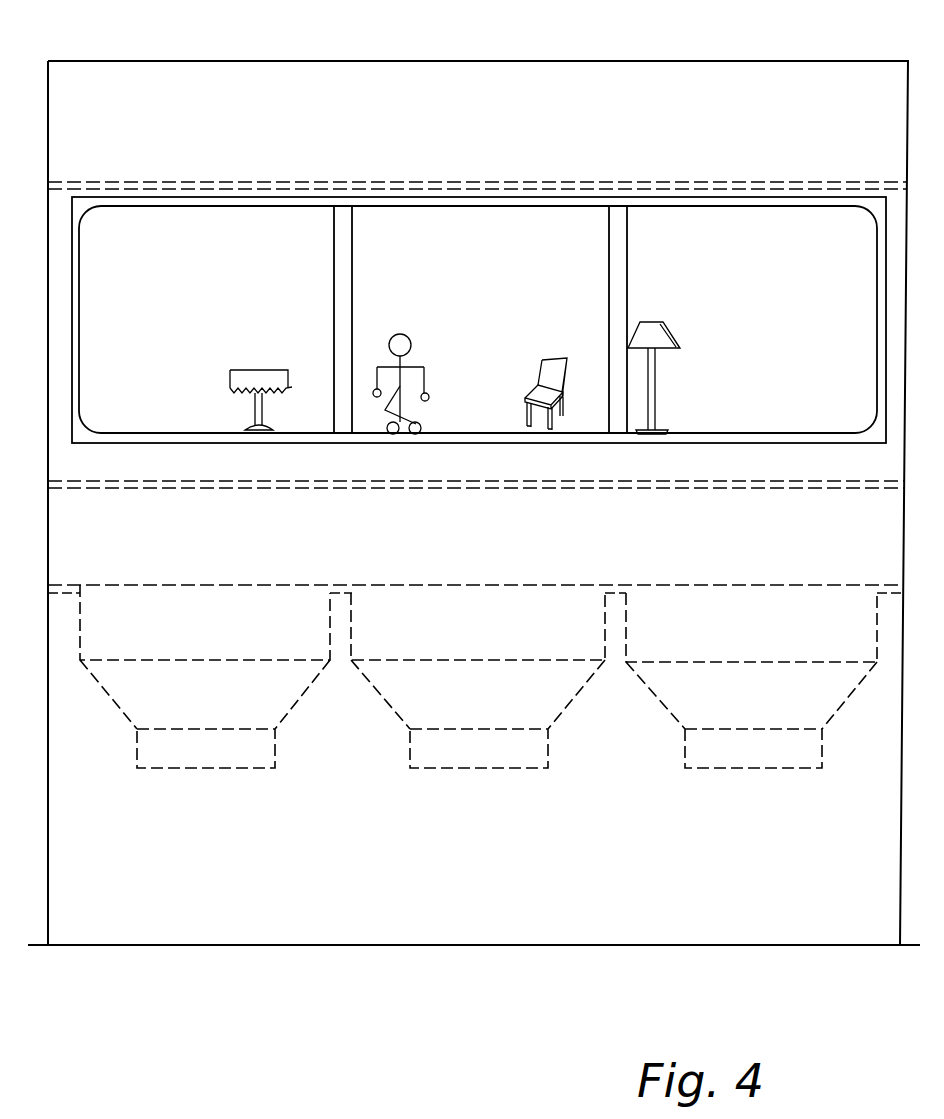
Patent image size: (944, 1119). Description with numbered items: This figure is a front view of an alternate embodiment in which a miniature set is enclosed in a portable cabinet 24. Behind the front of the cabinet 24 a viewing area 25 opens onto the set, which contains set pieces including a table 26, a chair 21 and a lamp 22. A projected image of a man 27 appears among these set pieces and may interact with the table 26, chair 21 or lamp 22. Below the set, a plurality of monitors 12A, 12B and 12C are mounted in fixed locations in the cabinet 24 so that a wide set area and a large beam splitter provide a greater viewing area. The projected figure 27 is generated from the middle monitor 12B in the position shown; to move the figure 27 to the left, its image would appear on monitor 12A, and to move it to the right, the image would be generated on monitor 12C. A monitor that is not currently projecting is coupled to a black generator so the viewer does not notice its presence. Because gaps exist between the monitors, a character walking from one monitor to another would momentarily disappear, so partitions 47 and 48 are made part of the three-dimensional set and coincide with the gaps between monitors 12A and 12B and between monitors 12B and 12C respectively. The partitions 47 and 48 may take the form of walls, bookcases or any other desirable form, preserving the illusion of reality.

The cabinet 24 is at (755, 71).
The viewing area 25 is at (830, 212).
The partition 47 is at (335, 229).
The partition 48 is at (626, 288).
The table 26 is at (270, 370).
The man 27 is at (399, 334).
The chair 21 is at (557, 356).
The lamp 22 is at (676, 333).
The monitor 12A is at (275, 757).
The monitor 12B is at (548, 757).
The monitor 12C is at (780, 770).